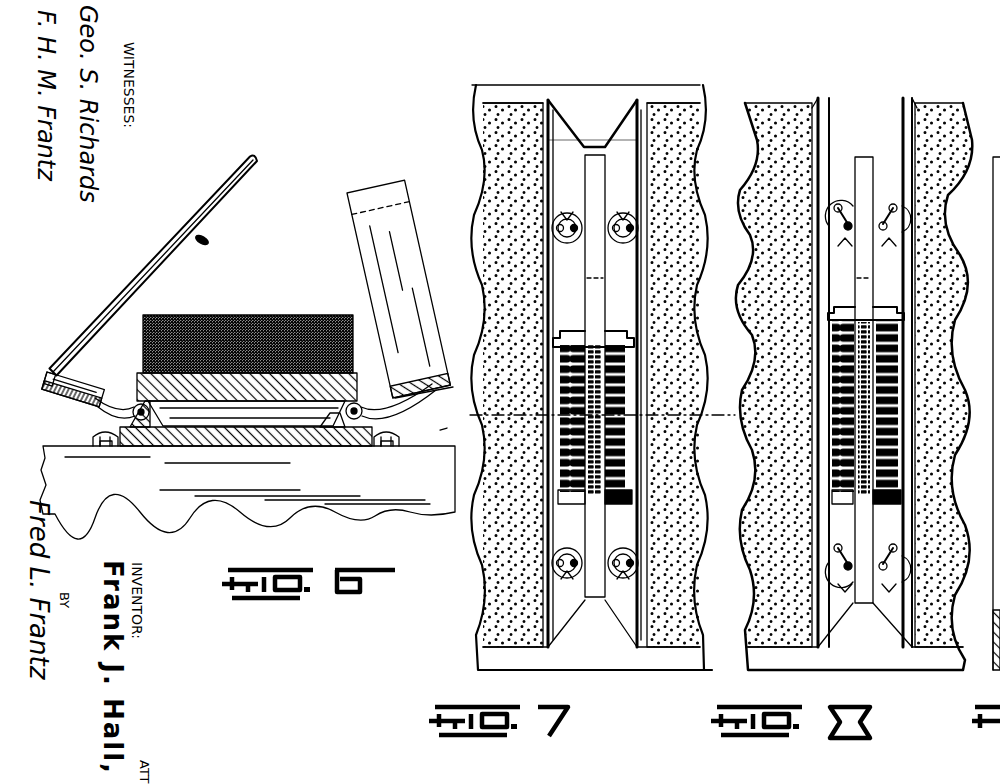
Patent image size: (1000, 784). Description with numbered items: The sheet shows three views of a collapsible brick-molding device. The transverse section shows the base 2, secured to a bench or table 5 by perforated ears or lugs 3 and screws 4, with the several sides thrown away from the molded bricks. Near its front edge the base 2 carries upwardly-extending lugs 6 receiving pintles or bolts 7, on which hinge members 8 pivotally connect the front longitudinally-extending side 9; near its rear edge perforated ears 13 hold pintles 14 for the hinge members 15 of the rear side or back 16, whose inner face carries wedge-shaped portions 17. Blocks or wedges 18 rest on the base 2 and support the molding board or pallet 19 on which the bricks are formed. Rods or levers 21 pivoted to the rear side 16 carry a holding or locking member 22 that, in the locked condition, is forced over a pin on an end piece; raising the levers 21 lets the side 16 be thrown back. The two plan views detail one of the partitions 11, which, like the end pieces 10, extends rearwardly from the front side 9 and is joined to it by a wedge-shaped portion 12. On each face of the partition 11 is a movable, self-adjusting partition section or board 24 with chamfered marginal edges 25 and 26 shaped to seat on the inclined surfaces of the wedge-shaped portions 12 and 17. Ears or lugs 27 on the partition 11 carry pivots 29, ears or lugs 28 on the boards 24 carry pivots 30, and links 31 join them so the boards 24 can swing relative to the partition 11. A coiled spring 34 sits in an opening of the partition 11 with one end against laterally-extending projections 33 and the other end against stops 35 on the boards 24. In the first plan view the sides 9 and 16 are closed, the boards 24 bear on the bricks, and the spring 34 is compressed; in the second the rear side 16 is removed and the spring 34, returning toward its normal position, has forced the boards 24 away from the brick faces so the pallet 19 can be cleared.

In FIG. 6, the base 2 is at (280, 446).
In FIG. 6, the perforated ears or lugs 3 is at (94, 441).
In FIG. 6, the screws 4 is at (101, 446).
In FIG. 6, the bench, table, or other support 5 is at (212, 498).
In FIG. 6, the upwardly-extending lugs or ears 6 is at (336, 430).
In FIG. 6, the pintles or bolts 7 is at (355, 422).
In FIG. 6, the hinge members 8 is at (404, 409).
In FIG. 6, the front longitudinally-extending side or face 9 is at (447, 392).
In FIG. 7, the front longitudinally-extending side or face 9 is at (492, 656).
In FIG. 8, the front longitudinally-extending side or face 9 is at (775, 661).
In FIG. 6, the end pieces or members 10 is at (457, 427).
In FIG. 7, the end pieces or members 10 is at (712, 417).
In FIG. 7, the intermediate partitions or walls 11 is at (600, 185).
In FIG. 8, the intermediate partitions or walls 11 is at (742, 173).
In FIG. 7, the angularly-inclined or wedge-shaped members or portions 12 is at (568, 632).
In FIG. 8, the angularly-inclined or wedge-shaped members or portions 12 is at (886, 632).
In FIG. 6, the perforated ears or lugs 13 is at (150, 440).
In FIG. 6, the pintles or bolts 14 is at (136, 405).
In FIG. 6, the hinge members 15 is at (108, 419).
In FIG. 6, the rear longitudinally-extending side or back 16 is at (47, 382).
In FIG. 7, the rear longitudinally-extending side or back 16 is at (672, 96).
In FIG. 6, the angularly-inclined or wedge-shaped members or portions 17 is at (58, 372).
In FIG. 7, the angularly-inclined or wedge-shaped members or portions 17 is at (588, 122).
In FIG. 6, the blocks or wedges 18 is at (200, 426).
In FIG. 6, the molding board or pallet 19 is at (246, 402).
In FIG. 6, the rods or levers 21 is at (160, 268).
In FIG. 6, the holding or locking member 22 is at (210, 243).
In FIG. 6, the movable and self-adjusting partition sections or boards 24 is at (376, 200).
In FIG. 7, the movable and self-adjusting partition sections or boards 24 is at (546, 137).
In FIG. 8, the movable and self-adjusting partition sections or boards 24 is at (738, 138).
In FIG. 7, the angular or chamfered marginal edge 25 is at (545, 650).
In FIG. 8, the angular or chamfered marginal edge 25 is at (835, 650).
In FIG. 7, the angular or chamfered marginal edge 26 is at (632, 98).
In FIG. 8, the angular or chamfered marginal edge 26 is at (910, 99).
In FIG. 7, the ears or lugs 27 is at (576, 213).
In FIG. 8, the ears or lugs 27 is at (844, 248).
In FIG. 7, the ears or lugs 28 is at (553, 215).
In FIG. 8, the ears or lugs 28 is at (742, 214).
In FIG. 7, the pivots 29 is at (574, 246).
In FIG. 8, the pivots 29 is at (836, 227).
In FIG. 7, the pivots 30 is at (558, 228).
In FIG. 8, the pivots 30 is at (742, 241).
In FIG. 7, the links 31 is at (561, 241).
In FIG. 8, the links 31 is at (742, 266).
In FIG. 7, the laterally-extending projections 33 is at (636, 497).
In FIG. 8, the laterally-extending projections 33 is at (833, 497).
In FIG. 7, the coiled spring 34 is at (645, 368).
In FIG. 8, the coiled spring 34 is at (833, 351).
In FIG. 7, the projections or stops 35 is at (554, 328).
In FIG. 8, the projections or stops 35 is at (748, 313).